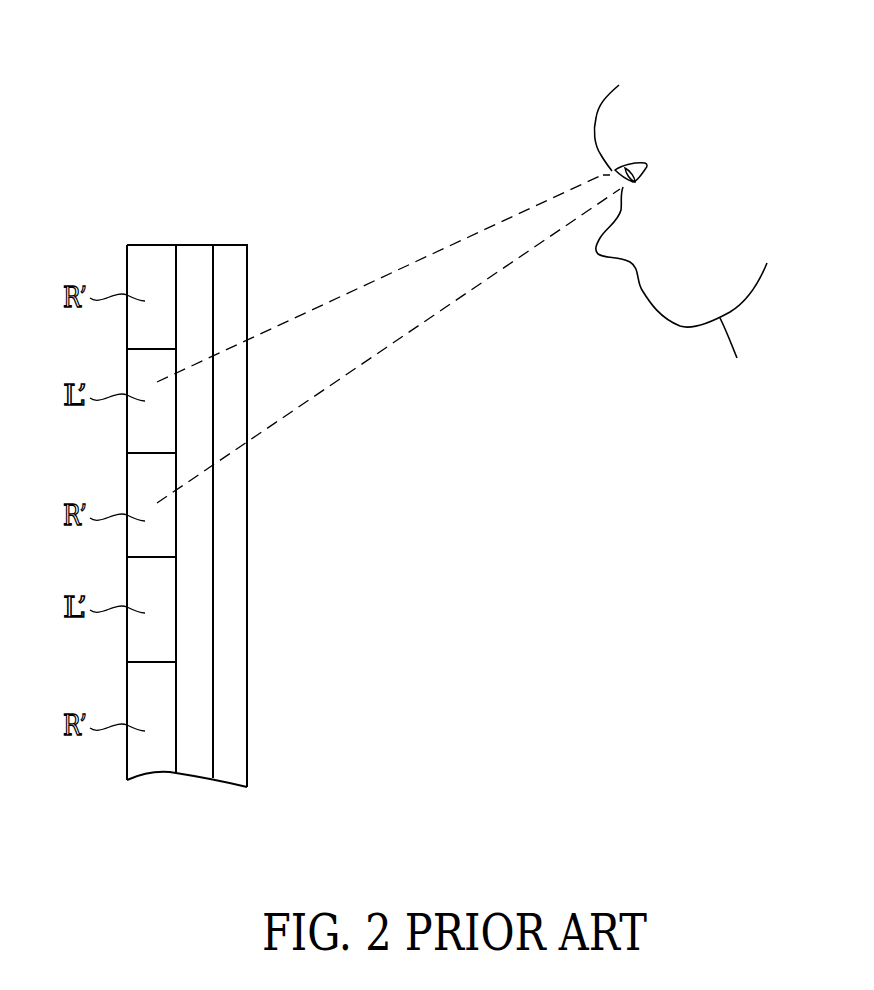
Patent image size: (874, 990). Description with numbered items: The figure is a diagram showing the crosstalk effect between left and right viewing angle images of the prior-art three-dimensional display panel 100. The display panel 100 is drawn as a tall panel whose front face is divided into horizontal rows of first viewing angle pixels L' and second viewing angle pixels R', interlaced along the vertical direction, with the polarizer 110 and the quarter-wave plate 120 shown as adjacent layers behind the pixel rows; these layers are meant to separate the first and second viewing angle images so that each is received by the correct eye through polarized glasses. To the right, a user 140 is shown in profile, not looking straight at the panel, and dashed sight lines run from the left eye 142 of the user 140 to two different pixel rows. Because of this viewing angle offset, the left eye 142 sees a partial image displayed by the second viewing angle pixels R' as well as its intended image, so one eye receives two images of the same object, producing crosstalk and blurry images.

The 3D display panel 100 is at (121, 180).
The polarizer 110 is at (198, 252).
The quarter-wave plate 120 is at (232, 253).
The user 140 is at (597, 63).
The left eye 142 is at (580, 166).